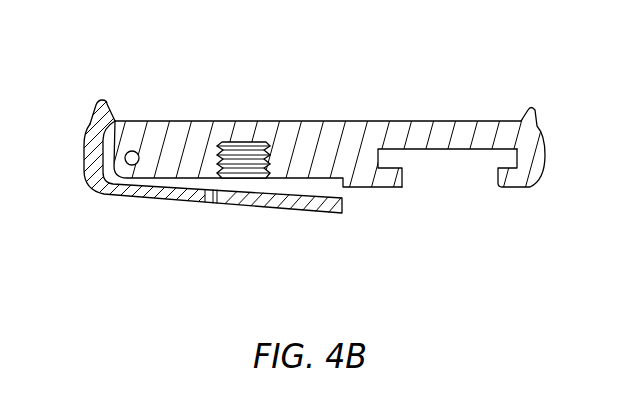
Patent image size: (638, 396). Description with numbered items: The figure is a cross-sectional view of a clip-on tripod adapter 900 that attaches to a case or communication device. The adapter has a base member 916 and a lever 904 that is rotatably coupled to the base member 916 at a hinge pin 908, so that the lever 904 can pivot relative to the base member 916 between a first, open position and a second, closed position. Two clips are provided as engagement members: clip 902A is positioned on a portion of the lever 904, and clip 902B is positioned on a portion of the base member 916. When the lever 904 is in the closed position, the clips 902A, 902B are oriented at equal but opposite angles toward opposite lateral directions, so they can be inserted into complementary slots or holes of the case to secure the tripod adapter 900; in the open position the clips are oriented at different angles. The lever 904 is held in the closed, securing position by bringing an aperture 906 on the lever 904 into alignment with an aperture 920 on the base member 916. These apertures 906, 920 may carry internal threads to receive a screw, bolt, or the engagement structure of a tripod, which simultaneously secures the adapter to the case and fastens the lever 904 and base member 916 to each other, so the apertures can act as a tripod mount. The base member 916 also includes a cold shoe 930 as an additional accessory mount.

The clip-on tripod adapter 900 is at (401, 268).
The clip 902A is at (102, 101).
The clip 902B is at (538, 106).
The lever 904 is at (190, 203).
The aperture 906 is at (247, 203).
The hinge pin 908 is at (135, 153).
The base member 916 is at (322, 132).
The aperture 920 is at (243, 143).
The cold shoe 930 is at (455, 168).